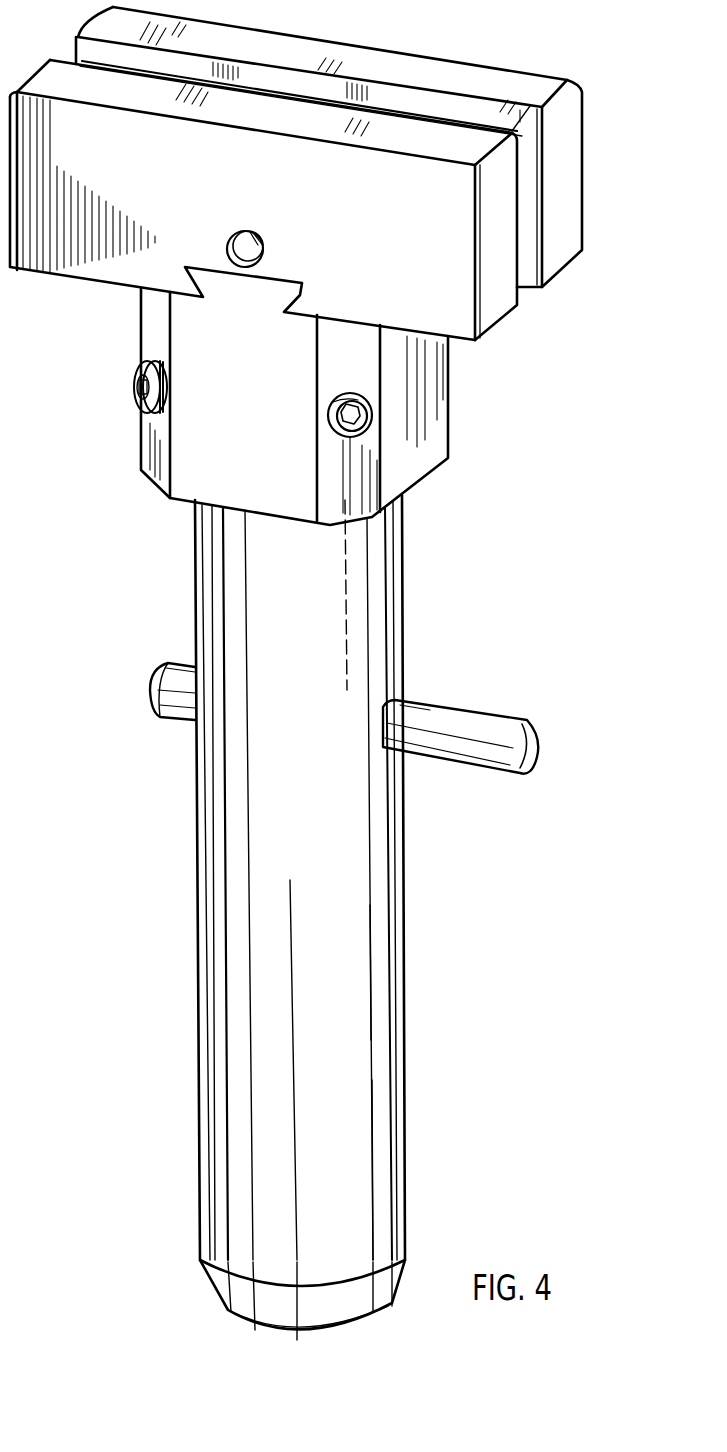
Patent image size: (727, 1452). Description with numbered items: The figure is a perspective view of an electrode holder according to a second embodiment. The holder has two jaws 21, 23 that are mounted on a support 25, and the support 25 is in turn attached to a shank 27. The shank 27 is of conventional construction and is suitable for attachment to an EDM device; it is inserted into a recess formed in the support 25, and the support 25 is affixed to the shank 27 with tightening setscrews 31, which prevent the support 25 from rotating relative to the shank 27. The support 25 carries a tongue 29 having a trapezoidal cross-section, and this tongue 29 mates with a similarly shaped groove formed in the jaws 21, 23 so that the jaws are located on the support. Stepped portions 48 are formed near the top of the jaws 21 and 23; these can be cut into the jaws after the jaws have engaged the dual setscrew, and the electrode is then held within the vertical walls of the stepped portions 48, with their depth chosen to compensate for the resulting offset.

The jaw 21 is at (493, 305).
The jaw 23 is at (562, 245).
The support 25 is at (433, 450).
The shank 27 is at (380, 633).
The tongue 29 is at (210, 280).
The tightening setscrews 31 is at (133, 400).
The stepped portions 48 is at (537, 117).